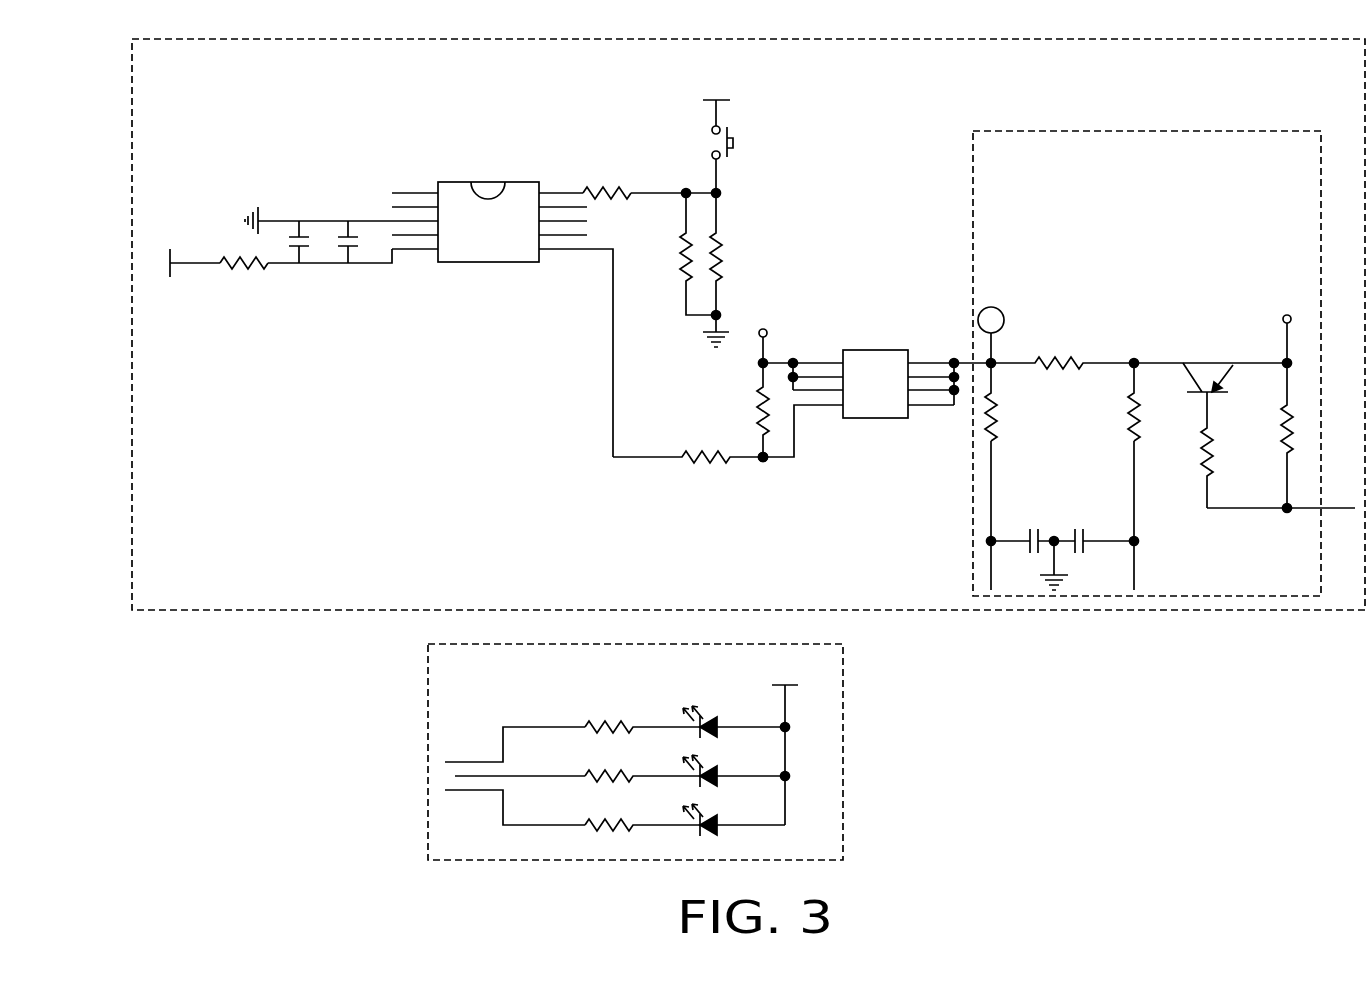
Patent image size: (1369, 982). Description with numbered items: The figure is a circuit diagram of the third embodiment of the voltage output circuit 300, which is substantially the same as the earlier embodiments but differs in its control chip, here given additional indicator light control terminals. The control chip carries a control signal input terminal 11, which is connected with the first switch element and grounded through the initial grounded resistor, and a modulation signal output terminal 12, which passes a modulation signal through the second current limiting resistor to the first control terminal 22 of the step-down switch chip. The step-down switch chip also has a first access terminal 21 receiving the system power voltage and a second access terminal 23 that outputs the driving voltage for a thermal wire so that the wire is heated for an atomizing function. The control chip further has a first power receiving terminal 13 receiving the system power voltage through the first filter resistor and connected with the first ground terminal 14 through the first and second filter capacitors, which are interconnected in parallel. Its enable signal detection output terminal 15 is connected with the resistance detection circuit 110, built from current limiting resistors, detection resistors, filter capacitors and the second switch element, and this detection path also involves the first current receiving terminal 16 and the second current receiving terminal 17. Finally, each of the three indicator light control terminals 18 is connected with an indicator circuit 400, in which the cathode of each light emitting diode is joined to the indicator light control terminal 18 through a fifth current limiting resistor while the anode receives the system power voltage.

The voltage output circuit 300 is at (132, 130).
The resistance detection circuit 110 is at (1195, 131).
The indicator circuit 400 is at (428, 688).
The control signal input terminal 11 is at (546, 193).
The modulation signal output terminal 12 is at (616, 249).
The first power receiving terminal 13 is at (393, 252).
The first ground terminal 14 is at (384, 220).
The enable signal detection output terminal 15 is at (563, 236).
The first current receiving terminal 16 is at (563, 207).
The second current receiving terminal 17 is at (424, 193).
The indicator light control terminal 18 is at (587, 221).
The first access terminal 21 is at (803, 363).
The first control terminal 22 is at (761, 461).
The second access terminal 23 is at (908, 353).